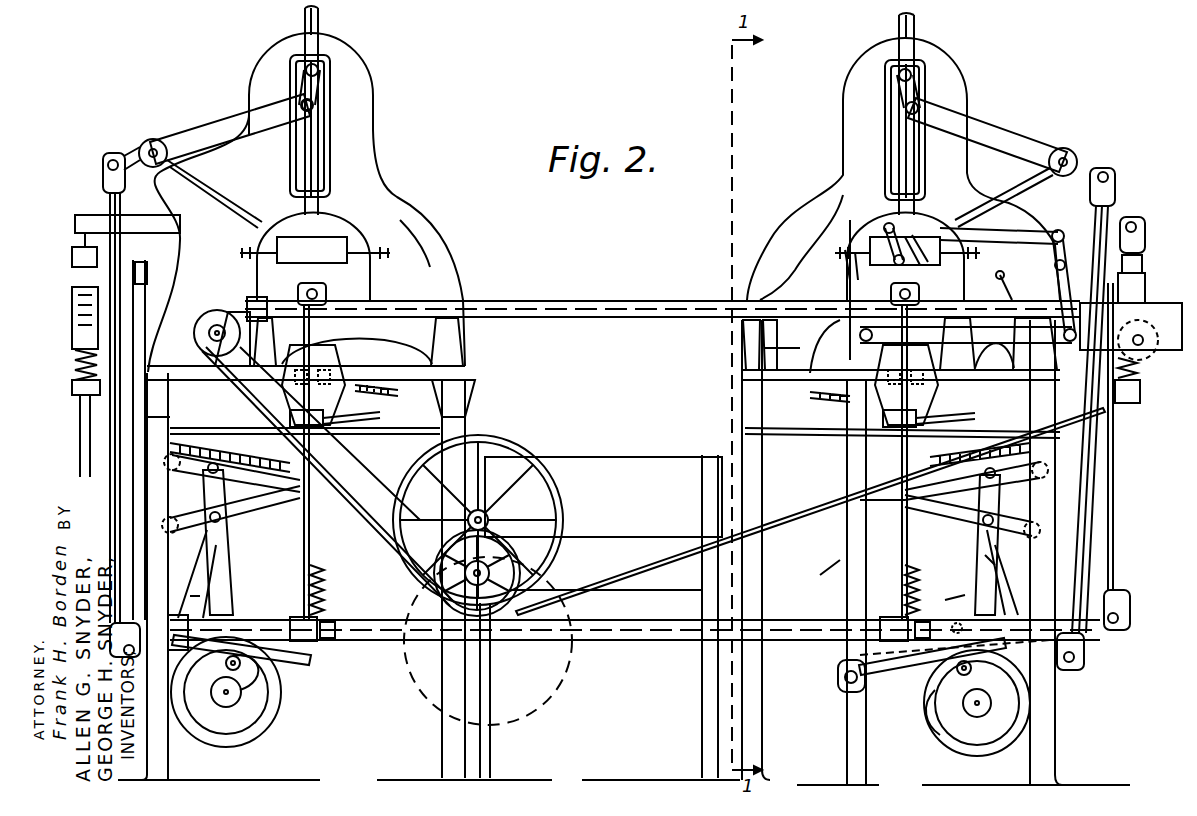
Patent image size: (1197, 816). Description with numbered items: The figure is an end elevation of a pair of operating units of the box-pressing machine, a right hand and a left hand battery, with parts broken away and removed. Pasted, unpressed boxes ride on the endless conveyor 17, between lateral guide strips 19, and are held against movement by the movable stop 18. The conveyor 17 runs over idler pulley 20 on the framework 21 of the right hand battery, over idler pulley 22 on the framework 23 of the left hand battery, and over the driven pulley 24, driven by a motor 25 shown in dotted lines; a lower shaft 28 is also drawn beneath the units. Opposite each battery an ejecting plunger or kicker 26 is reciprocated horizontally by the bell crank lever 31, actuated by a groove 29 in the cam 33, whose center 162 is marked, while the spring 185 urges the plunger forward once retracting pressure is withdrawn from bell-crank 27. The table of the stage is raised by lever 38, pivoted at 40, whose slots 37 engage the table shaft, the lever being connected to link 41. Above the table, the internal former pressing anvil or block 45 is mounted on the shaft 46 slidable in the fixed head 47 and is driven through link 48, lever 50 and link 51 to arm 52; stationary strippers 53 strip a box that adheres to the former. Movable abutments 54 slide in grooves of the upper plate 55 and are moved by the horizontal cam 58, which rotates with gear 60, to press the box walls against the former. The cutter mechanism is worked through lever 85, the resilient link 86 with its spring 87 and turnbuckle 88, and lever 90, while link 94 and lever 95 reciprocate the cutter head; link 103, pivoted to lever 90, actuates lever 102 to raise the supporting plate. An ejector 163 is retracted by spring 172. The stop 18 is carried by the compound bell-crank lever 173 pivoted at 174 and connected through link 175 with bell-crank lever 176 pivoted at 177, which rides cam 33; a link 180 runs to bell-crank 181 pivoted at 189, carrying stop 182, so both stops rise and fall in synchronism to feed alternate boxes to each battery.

The endless conveyor 17 is at (612, 305).
The movable stop 18 is at (998, 286).
The lateral guide strips 19 is at (570, 303).
The idler pulley 20 is at (1145, 355).
The framework 21 is at (748, 725).
The idler pulley 22 is at (205, 315).
The framework 23 is at (165, 760).
The driven pulley 24 is at (515, 545).
The motor 25 is at (555, 688).
The ejecting plunger or kicker 26 is at (918, 276).
The bell-crank 27 is at (309, 545).
The lower shaft 28 is at (395, 642).
The groove 29 is at (255, 718).
The bell crank lever 31 is at (265, 662).
The cam 33 is at (262, 732).
The slots 37 is at (882, 503).
The lever 38 is at (268, 490).
The pivot 40 is at (1132, 463).
The link 41 is at (598, 572).
The internal former pressing anvil or block 45 is at (965, 200).
The shaft 46 is at (318, 135).
The fixed head 47 is at (372, 140).
The link 48 is at (318, 90).
The lever 50 is at (205, 128).
The link 51 is at (1112, 213).
The arm 52 is at (1072, 672).
The stationary strippers 53 is at (268, 222).
The pressing walls, followers or movable abutments 54 is at (830, 342).
The upper plate 55 is at (466, 376).
The horizontal cam 58 is at (825, 402).
The gear 60 is at (345, 425).
The lever 85 is at (1025, 222).
The resilient link 86 is at (72, 395).
The spring 87 is at (75, 360).
The turnbuckle 88 is at (72, 282).
The lever 90 is at (1118, 632).
The link 94 is at (147, 262).
The lever 95 is at (112, 495).
The lever 102 is at (262, 525).
The link 103 is at (195, 598).
The wheel center 162 is at (232, 694).
The ejector 163 is at (925, 722).
The spring 172 is at (205, 445).
The compound bell-crank lever 173 is at (1142, 245).
The pivot 174 is at (1068, 240).
The link 175 is at (1028, 343).
The bell-crank lever 176 is at (842, 582).
The pivot 177 is at (848, 690).
The link 180 is at (1000, 205).
The bell-crank 181 is at (885, 235).
The stop 182 is at (848, 270).
The spring 185 is at (324, 612).
The pivot 189 is at (918, 240).